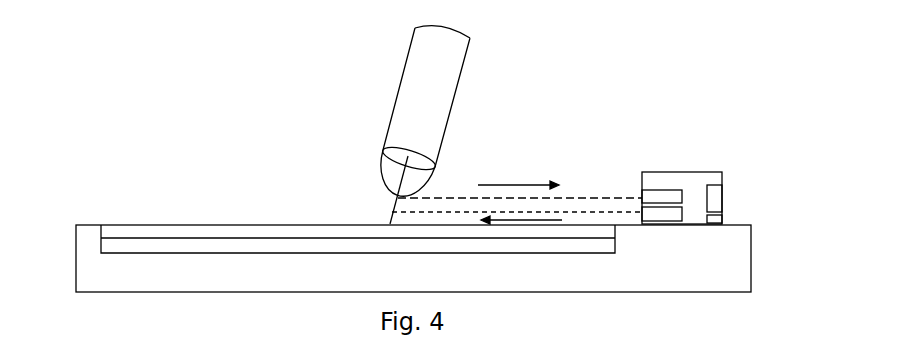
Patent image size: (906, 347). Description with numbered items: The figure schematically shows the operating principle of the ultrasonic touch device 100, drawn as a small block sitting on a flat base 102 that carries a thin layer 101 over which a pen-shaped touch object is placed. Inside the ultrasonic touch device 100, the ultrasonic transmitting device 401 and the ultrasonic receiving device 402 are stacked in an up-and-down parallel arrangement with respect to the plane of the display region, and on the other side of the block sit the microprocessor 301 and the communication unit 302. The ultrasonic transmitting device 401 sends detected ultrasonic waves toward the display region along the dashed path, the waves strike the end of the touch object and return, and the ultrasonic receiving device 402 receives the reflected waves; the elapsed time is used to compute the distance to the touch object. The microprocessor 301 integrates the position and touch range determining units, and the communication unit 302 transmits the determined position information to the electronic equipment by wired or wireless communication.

The ultrasonic touch device 100 is at (705, 138).
The workpiece film layer 101 is at (152, 238).
The base platform 102 is at (134, 281).
The microprocessor 301 is at (710, 201).
The communication unit 302 is at (718, 222).
The ultrasonic transmitting device 401 is at (645, 206).
The ultrasonic receiving device 402 is at (668, 190).